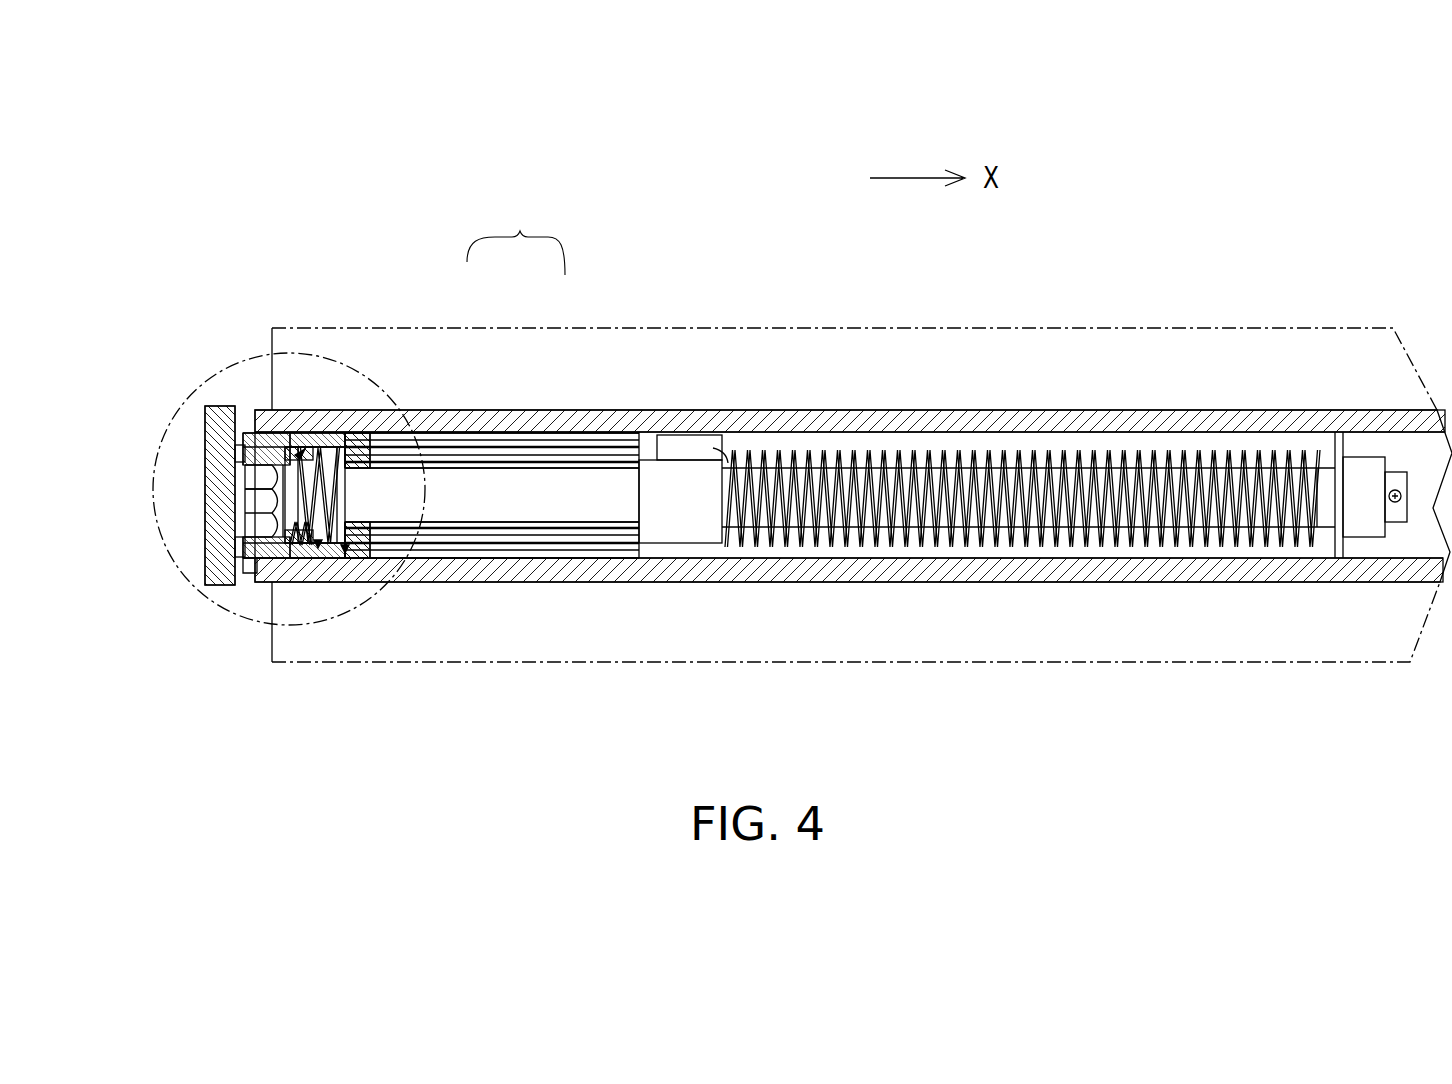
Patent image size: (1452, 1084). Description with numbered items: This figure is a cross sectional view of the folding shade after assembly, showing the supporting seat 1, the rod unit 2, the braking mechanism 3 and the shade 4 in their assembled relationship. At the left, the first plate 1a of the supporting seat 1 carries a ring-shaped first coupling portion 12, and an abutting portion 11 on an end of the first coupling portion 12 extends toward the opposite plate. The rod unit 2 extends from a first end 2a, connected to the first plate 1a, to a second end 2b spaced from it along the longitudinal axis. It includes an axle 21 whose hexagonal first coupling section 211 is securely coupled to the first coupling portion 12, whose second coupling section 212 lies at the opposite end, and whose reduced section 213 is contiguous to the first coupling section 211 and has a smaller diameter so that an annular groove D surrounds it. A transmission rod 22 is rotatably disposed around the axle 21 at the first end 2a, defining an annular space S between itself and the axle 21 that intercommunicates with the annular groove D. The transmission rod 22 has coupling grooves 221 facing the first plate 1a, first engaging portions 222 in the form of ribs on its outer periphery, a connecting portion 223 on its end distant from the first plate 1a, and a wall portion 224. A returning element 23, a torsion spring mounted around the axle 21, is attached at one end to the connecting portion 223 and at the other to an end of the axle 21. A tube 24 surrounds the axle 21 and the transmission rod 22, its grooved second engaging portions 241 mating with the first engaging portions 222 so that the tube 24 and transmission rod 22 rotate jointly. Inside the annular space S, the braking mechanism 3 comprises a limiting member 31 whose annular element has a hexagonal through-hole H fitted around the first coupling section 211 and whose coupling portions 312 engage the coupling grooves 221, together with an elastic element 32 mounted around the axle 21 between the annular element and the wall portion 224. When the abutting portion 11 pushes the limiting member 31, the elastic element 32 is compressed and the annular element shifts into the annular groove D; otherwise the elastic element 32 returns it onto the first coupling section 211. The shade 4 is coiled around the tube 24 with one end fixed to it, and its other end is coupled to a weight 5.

The supporting seat 1 is at (223, 417).
The first plate 1a is at (220, 406).
The rod unit 2 is at (1067, 447).
The first end 2a is at (338, 550).
The second end 2b is at (1328, 458).
The braking mechanism 3 is at (425, 371).
The shade 4 is at (876, 328).
The weight 5 is at (351, 360).
The abutting portion 11 is at (285, 560).
The first coupling portion 12 is at (232, 445).
The axle 21 is at (1023, 455).
The transmission rod 22 is at (500, 510).
The returning element 23 is at (1158, 455).
The tube 24 is at (818, 420).
The limiting member 31 is at (297, 448).
The elastic element 32 is at (343, 490).
The first coupling section 211 is at (194, 449).
The second coupling section 212 is at (1323, 488).
The reduced section 213 is at (238, 472).
The coupling groove 221 is at (300, 440).
The first engaging portion 222 is at (546, 390).
The connecting portion 223 is at (687, 445).
The wall portion 224 is at (345, 556).
The second engaging portion 241 is at (613, 433).
The coupling portion 312 is at (268, 432).
The annular groove D is at (318, 548).
The annular space S is at (322, 548).
The through-hole H is at (243, 510).